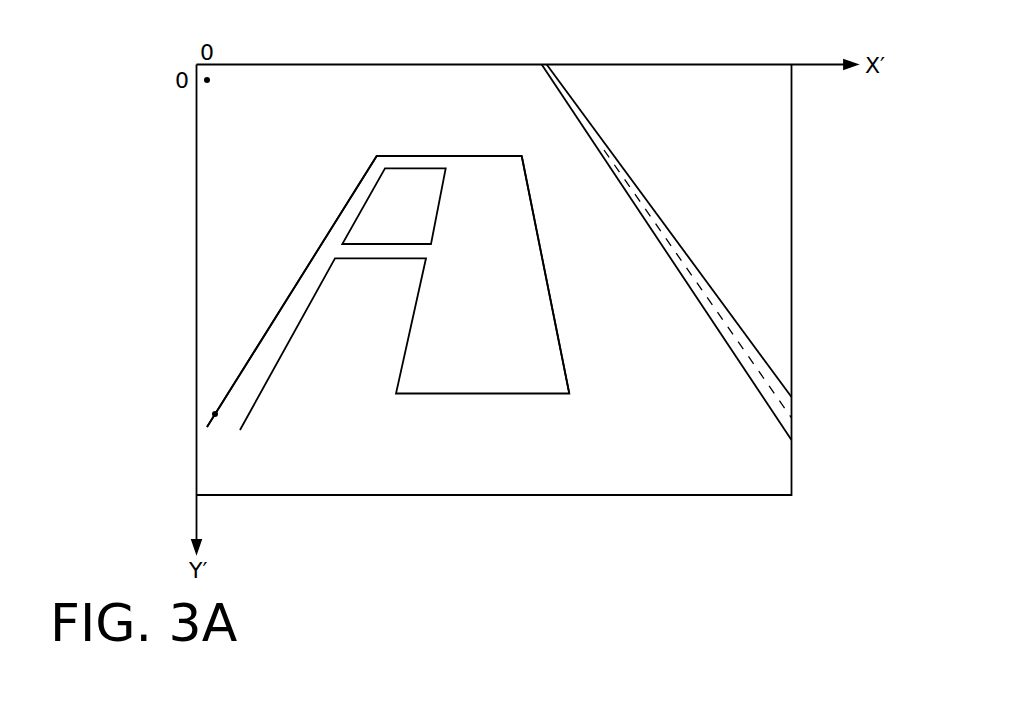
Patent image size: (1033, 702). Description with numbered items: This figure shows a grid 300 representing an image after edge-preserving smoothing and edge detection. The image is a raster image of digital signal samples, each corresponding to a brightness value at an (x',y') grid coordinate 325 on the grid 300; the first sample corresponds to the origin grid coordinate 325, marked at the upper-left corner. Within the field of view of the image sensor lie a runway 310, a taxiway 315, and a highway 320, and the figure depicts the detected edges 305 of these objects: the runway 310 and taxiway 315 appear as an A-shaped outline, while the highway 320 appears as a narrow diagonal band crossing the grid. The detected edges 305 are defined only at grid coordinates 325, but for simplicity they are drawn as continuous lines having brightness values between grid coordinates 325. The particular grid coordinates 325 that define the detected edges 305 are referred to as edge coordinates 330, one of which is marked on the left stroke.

The grid 300 is at (395, 64).
The detected edges 305 is at (542, 256).
The runway 310 is at (588, 357).
The taxiway 315 is at (290, 206).
The highway 320 is at (650, 172).
The grid coordinate 325 is at (207, 80).
The edge coordinates 330 is at (215, 414).